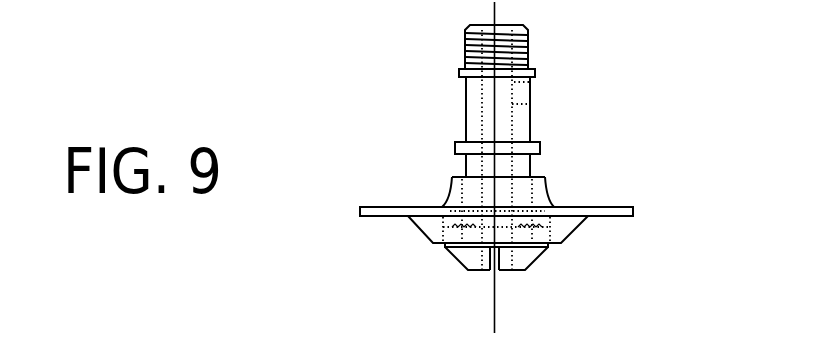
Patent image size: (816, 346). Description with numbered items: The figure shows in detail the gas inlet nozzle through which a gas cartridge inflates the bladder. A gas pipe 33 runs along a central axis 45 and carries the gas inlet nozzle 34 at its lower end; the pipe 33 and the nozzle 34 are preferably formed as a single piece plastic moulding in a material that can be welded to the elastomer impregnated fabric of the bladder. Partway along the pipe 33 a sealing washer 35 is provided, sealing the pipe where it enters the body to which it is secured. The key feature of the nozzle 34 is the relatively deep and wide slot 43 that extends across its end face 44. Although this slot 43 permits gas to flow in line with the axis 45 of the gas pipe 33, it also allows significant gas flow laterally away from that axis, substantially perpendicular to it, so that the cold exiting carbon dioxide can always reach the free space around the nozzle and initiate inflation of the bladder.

The gas pipe 33 is at (520, 115).
The gas inlet nozzle 34 is at (528, 257).
The sealing washer 35 is at (567, 225).
The slot 43 is at (494, 268).
The face 44 is at (472, 272).
The axis 45 is at (492, 112).